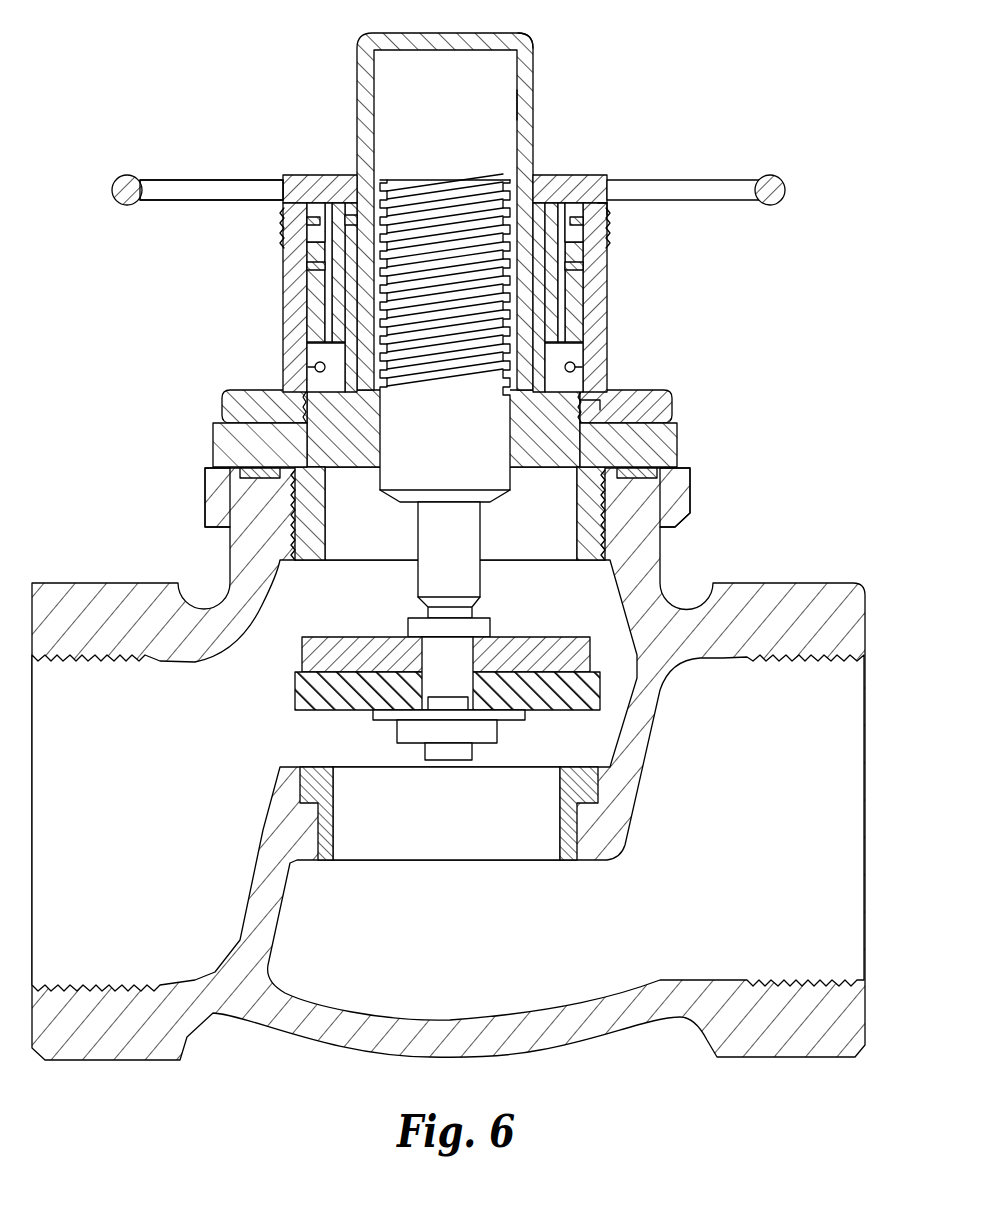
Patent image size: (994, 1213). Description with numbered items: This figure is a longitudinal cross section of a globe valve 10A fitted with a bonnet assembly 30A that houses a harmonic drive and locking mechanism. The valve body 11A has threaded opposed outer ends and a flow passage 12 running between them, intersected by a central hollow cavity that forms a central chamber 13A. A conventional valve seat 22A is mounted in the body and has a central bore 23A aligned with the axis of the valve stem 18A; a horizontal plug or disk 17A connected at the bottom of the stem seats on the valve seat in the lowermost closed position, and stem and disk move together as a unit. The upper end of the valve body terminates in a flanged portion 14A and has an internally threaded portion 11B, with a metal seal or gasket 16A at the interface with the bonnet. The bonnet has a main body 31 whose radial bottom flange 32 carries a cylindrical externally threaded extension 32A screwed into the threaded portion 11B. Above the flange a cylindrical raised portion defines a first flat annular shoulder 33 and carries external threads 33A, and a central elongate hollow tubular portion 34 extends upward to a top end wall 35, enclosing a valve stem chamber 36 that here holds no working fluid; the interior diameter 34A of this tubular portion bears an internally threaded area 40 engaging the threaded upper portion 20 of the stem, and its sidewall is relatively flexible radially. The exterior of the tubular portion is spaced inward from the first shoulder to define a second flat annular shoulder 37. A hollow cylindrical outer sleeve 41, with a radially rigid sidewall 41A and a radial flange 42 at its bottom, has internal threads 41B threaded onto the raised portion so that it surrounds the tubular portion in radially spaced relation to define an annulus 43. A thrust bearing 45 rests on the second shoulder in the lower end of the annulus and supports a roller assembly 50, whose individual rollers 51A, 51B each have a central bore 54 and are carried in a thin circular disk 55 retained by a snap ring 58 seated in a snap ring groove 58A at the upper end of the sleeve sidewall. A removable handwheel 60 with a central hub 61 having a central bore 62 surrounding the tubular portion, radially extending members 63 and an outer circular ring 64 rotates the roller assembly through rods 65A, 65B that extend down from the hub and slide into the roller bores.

The globe valve 10A is at (130, 442).
The valve body 11A is at (670, 522).
The internally threaded portion 11B is at (296, 515).
The flow passage 12 is at (181, 804).
The central chamber 13A is at (447, 916).
The flanged portion 14A is at (205, 490).
The metal seal or gasket 16A is at (690, 490).
The plug or disk 17A is at (558, 637).
The valve stem 18A is at (463, 542).
The threaded stem 20 is at (444, 190).
The valve seat 22A is at (335, 807).
The central bore 23A is at (507, 814).
The bonnet assembly 30A is at (633, 153).
The main body 31 is at (382, 436).
The radial flange 32 is at (678, 440).
The cylindrical externally threaded extension 32A is at (578, 520).
The first flat annular shoulder 33 is at (240, 410).
The external threads 33A is at (345, 395).
The hollow tubular portion 34 is at (357, 120).
The interior diameter 34A is at (520, 103).
The top end wall 35 is at (500, 35).
The valve stem chamber 36 is at (456, 97).
The second flat annular shoulder 37 is at (318, 380).
The internally threaded area 40 is at (355, 296).
The outer sleeve 41 is at (595, 290).
The sidewall 41A is at (539, 297).
The internal threads 41B is at (608, 207).
The radial flange 42 is at (672, 405).
The annulus 43 is at (572, 346).
The thrust bearing 45 is at (578, 364).
The roller assembly 50 is at (609, 264).
The hub wall 51A is at (345, 315).
The hub wall 51B is at (600, 305).
The central bore 54 is at (330, 276).
The thin circular disk 55 is at (585, 221).
The snap ring 58 is at (298, 216).
The snap ring groove 58A is at (351, 220).
The handwheel 60 is at (194, 177).
The central hub 61 is at (322, 176).
The central bore 62 is at (536, 195).
The radially extending members 63 is at (210, 180).
The outer circular ring 64 is at (775, 175).
The rod 65A is at (325, 266).
The rod 65B is at (585, 270).